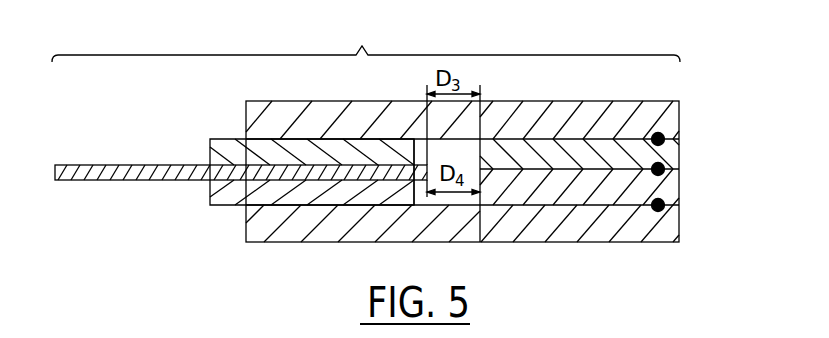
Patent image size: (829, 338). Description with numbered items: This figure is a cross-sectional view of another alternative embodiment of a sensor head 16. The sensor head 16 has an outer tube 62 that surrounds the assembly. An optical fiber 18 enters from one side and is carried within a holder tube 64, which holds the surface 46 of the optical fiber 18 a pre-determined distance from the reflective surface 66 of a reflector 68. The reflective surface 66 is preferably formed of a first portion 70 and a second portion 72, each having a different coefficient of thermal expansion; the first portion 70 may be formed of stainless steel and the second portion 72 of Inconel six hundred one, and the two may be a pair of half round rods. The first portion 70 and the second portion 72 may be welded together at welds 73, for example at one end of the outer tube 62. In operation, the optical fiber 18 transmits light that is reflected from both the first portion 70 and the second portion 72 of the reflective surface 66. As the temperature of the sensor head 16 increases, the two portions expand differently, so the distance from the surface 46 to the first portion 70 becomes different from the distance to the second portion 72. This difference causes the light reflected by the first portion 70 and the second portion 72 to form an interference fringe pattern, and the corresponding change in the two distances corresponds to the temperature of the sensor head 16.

The sensor head 16 is at (366, 38).
The optical fiber 18 is at (137, 164).
The surface 46 is at (430, 160).
The outer tube 62 is at (550, 100).
The holder tube 64 is at (223, 139).
The reflective surface 66 is at (414, 240).
The reflector 68 is at (665, 169).
The first portion 70 is at (502, 103).
The second portion 72 is at (473, 185).
The welds 73 is at (665, 133).